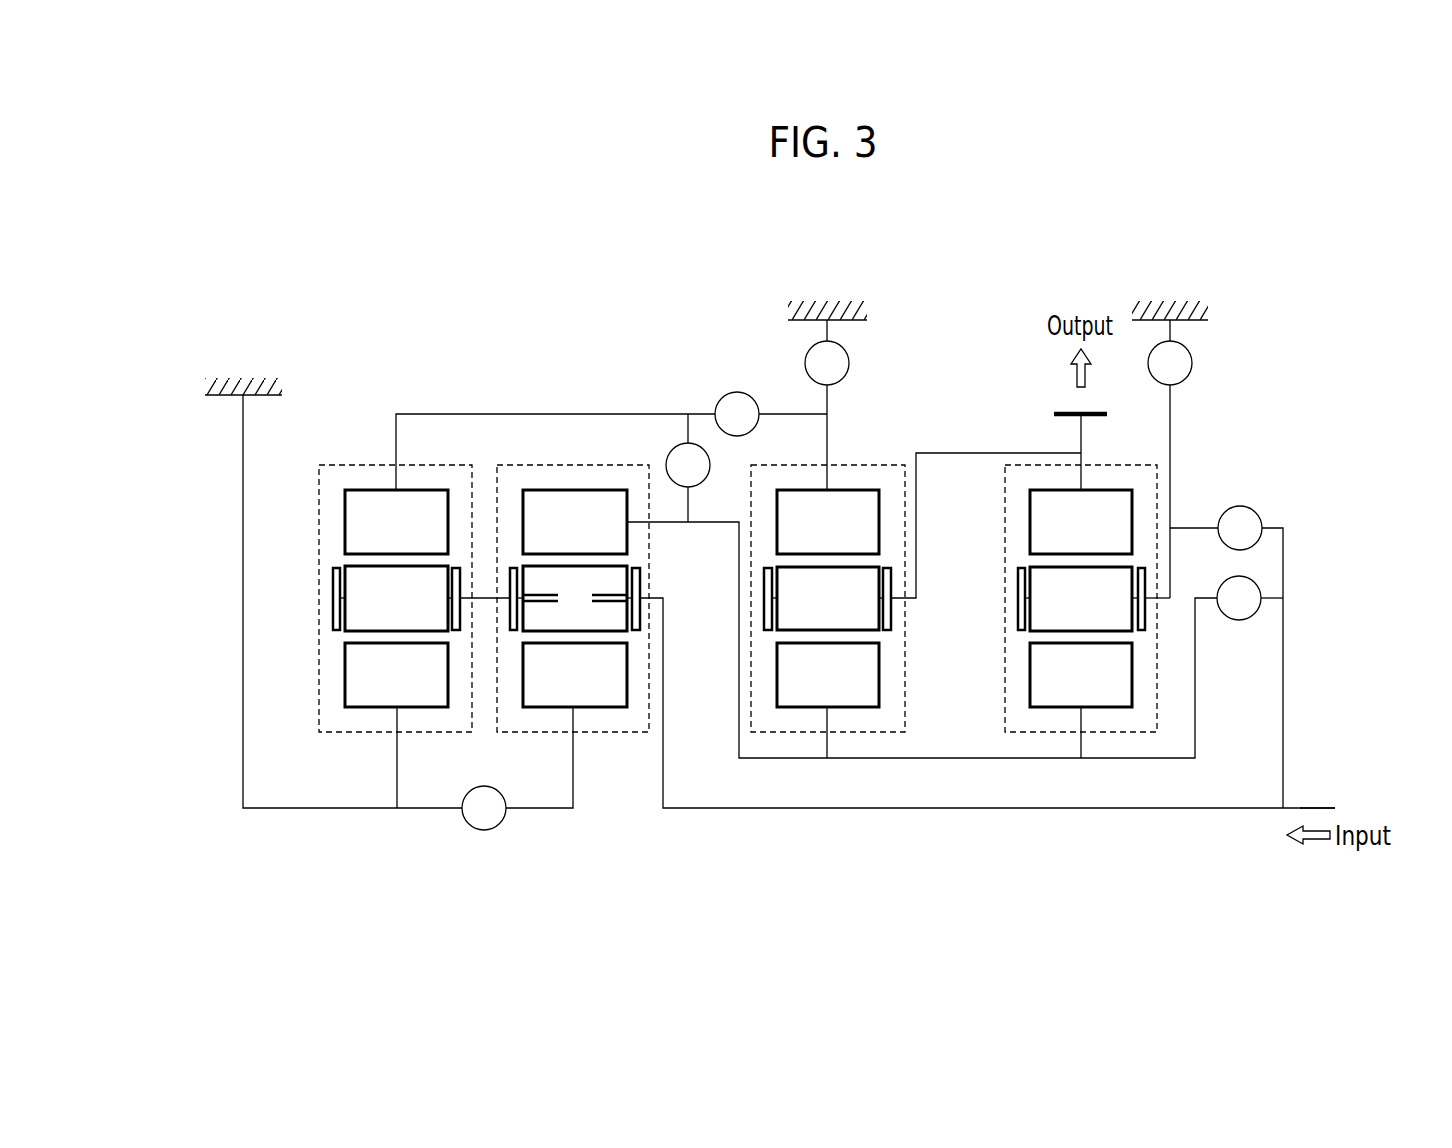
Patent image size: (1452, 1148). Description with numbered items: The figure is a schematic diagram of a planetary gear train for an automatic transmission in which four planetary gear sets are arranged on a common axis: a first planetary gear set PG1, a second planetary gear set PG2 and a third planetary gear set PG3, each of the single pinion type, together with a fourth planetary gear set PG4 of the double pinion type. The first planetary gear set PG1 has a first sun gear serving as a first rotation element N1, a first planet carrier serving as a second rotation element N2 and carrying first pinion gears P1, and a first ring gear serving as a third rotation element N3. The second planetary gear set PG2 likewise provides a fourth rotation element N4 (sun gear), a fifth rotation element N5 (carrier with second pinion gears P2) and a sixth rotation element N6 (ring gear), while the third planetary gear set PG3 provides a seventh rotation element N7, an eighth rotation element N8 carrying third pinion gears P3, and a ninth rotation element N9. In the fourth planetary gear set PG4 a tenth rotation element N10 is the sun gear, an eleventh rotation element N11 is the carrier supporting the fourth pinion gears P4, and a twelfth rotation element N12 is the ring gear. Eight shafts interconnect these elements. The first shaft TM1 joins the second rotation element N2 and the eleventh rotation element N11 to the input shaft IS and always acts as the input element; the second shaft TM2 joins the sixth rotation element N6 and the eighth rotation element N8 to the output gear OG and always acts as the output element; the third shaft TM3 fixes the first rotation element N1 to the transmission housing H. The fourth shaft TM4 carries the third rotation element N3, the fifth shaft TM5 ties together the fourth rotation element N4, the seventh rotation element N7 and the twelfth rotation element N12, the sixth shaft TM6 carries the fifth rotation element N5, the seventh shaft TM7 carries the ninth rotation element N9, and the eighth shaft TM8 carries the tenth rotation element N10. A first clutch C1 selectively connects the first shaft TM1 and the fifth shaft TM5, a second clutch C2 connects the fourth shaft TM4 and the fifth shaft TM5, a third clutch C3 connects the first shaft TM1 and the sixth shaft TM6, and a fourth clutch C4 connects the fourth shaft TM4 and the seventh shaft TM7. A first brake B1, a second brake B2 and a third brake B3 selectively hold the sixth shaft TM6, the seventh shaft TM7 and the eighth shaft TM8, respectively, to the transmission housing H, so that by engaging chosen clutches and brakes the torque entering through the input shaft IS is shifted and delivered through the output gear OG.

The transmission housing H is at (235, 390).
The first shaft TM1 is at (1144, 808).
The second shaft TM2 is at (949, 453).
The third shaft TM3 is at (243, 752).
The fourth shaft TM4 is at (486, 414).
The fifth shaft TM5 is at (880, 758).
The sixth shaft TM6 is at (1170, 424).
The seventh shaft TM7 is at (779, 413).
The eighth shaft TM8 is at (573, 786).
The first planetary gear set PG1 is at (363, 665).
The second planetary gear set PG2 is at (1048, 665).
The third planetary gear set PG3 is at (859, 665).
The fourth planetary gear set PG4 is at (589, 665).
The first rotation element N1 is at (355, 735).
The second rotation element N2 is at (333, 574).
The third rotation element N3 is at (396, 522).
The fourth rotation element N4 is at (1040, 735).
The fifth rotation element N5 is at (1018, 572).
The sixth rotation element N6 is at (1081, 522).
The seventh rotation element N7 is at (781, 735).
The eighth rotation element N8 is at (891, 622).
The ninth rotation element N9 is at (828, 522).
The tenth rotation element N10 is at (575, 675).
The eleventh rotation element N11 is at (640, 575).
The twelfth rotation element N12 is at (575, 522).
The first pinion gears P1 is at (396, 598).
The second pinion gears P2 is at (1081, 599).
The third pinion gears P3 is at (828, 598).
The fourth pinion gears P4 is at (575, 598).
The first clutch C1 is at (1250, 598).
The second clutch C2 is at (688, 468).
The third clutch C3 is at (1226, 657).
The fourth clutch C4 is at (737, 414).
The first brake B1 is at (1170, 352).
The second brake B2 is at (827, 352).
The third brake B3 is at (484, 808).
The output gear OG is at (1066, 413).
The input shaft IS is at (1320, 808).